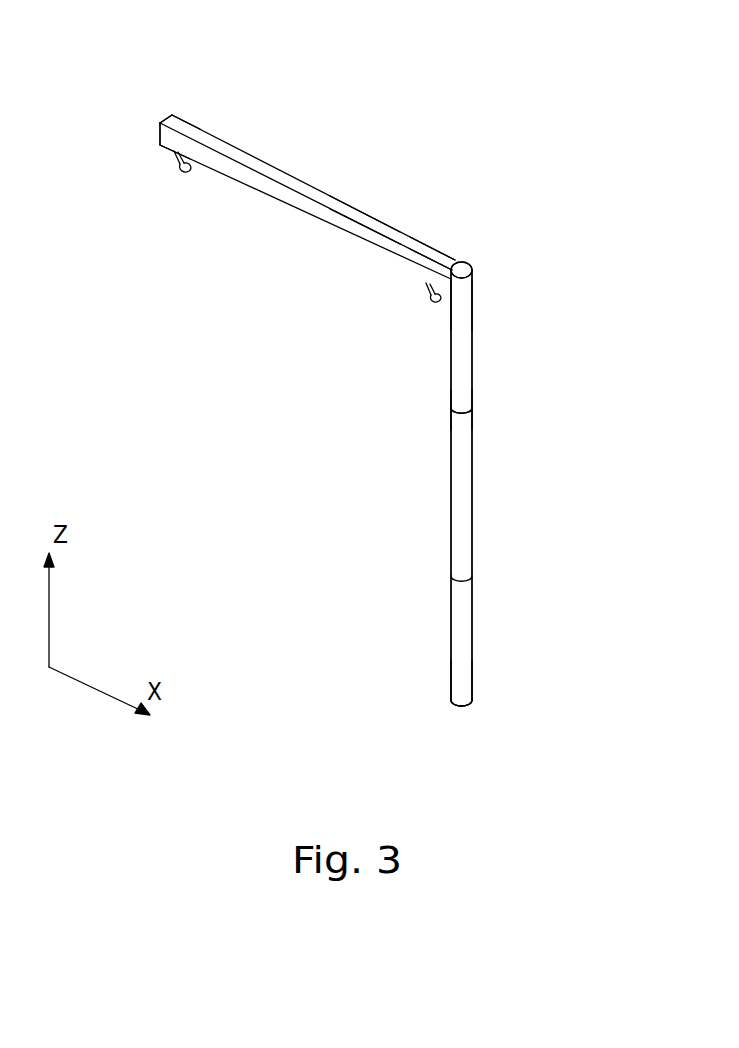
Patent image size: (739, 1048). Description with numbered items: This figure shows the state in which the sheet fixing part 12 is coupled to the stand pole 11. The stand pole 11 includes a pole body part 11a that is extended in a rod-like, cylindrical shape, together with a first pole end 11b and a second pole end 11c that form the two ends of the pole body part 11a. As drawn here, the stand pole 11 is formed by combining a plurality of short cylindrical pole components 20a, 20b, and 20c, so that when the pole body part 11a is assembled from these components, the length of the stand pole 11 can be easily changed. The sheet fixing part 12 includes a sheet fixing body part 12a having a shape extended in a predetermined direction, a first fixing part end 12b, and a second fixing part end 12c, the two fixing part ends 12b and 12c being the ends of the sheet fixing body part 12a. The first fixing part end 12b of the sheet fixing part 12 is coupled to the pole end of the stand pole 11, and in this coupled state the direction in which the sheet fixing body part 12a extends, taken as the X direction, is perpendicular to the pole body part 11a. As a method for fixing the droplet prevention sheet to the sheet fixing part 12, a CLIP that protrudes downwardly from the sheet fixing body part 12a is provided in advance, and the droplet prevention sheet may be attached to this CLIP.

The stand pole 11 is at (463, 561).
The pole body part 11a is at (463, 406).
The first pole end 11b is at (462, 302).
The second pole end 11c is at (461, 690).
The sheet fixing part 12 is at (300, 187).
The sheet fixing body part 12a is at (372, 223).
The first fixing part end 12b is at (453, 260).
The second fixing part end 12c is at (168, 116).
The pole component 20a is at (462, 373).
The pole component 20b is at (462, 472).
The pole component 20c is at (462, 636).
The clip CLIP is at (177, 168).